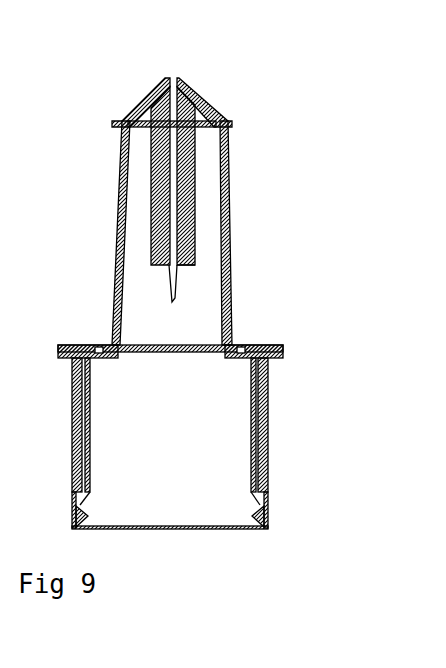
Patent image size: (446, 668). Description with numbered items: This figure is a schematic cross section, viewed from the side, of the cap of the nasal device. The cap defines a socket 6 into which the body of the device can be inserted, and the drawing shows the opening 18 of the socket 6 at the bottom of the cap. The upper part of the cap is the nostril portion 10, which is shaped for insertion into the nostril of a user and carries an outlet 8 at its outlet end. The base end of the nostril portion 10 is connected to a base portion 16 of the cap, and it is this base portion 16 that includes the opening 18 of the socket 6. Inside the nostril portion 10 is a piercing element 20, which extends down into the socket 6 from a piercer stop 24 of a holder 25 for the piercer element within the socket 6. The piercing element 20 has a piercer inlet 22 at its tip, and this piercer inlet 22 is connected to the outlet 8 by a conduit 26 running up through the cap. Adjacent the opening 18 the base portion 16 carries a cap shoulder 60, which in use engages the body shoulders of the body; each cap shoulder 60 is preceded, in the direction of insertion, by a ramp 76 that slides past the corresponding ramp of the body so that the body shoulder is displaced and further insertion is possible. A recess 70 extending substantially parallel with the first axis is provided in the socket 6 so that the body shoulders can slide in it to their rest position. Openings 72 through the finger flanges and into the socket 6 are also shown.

The outlet 8 is at (172, 78).
The nostril portion 10 is at (117, 168).
The conduit 26 is at (200, 160).
The holder 25 is at (197, 202).
The piercer stop 24 is at (188, 268).
The piercing element 20 is at (181, 208).
The piercer inlet 22 is at (166, 304).
The openings 72 is at (100, 345).
The recess 70 is at (210, 425).
The base portion 16 is at (268, 413).
The cap shoulder 60 is at (268, 498).
The ramp 76 is at (84, 530).
The opening 18 is at (193, 562).
The socket 6 is at (233, 556).